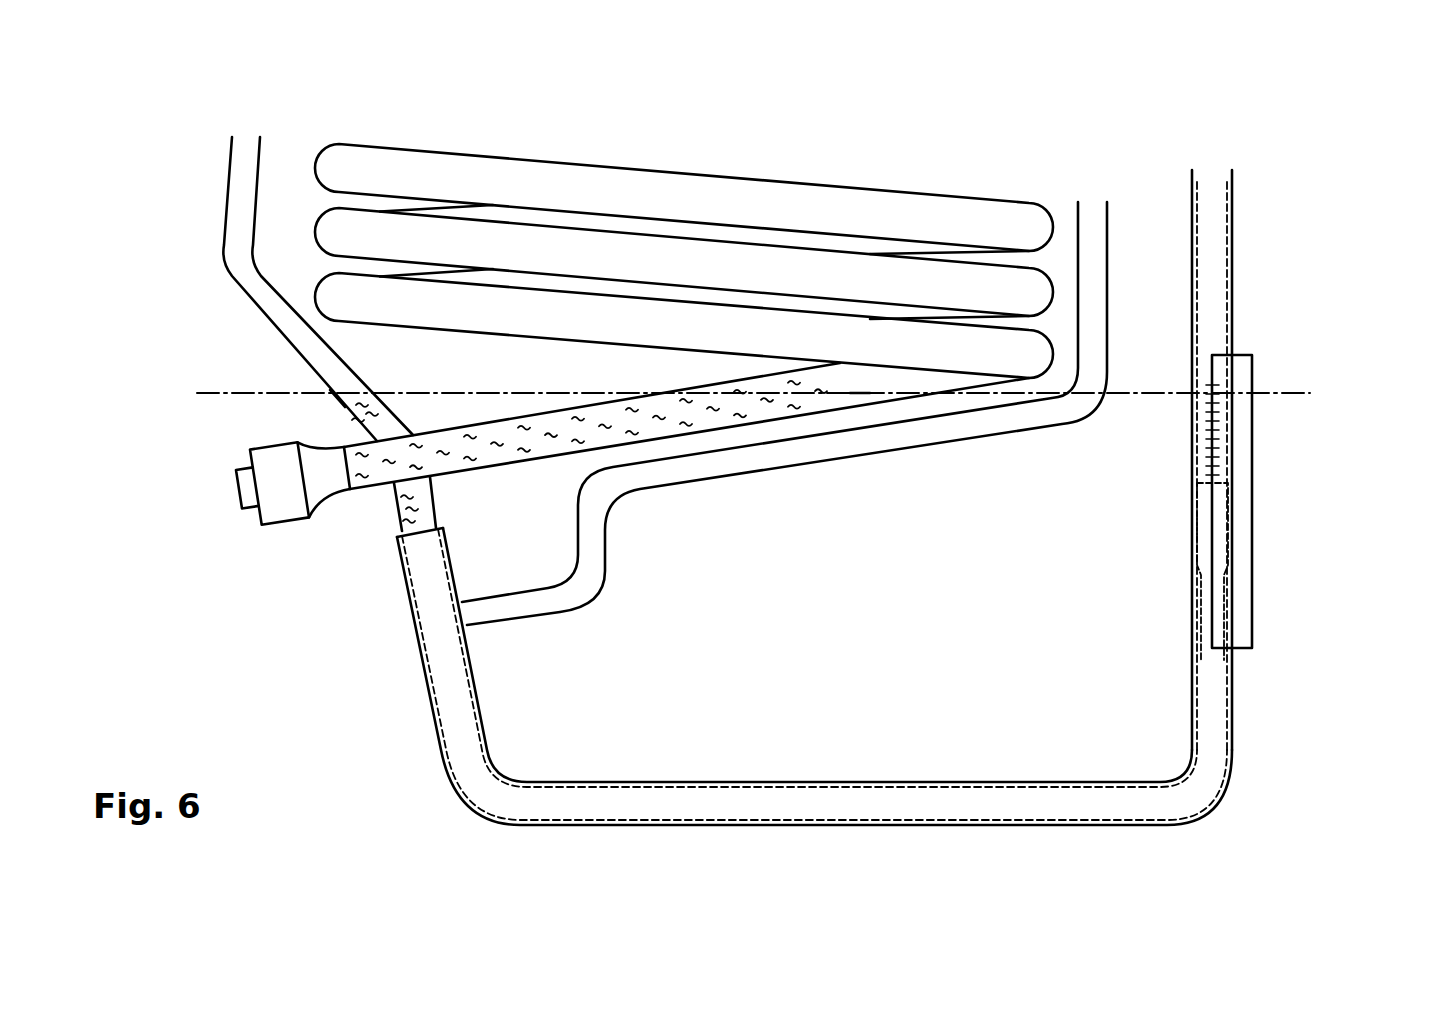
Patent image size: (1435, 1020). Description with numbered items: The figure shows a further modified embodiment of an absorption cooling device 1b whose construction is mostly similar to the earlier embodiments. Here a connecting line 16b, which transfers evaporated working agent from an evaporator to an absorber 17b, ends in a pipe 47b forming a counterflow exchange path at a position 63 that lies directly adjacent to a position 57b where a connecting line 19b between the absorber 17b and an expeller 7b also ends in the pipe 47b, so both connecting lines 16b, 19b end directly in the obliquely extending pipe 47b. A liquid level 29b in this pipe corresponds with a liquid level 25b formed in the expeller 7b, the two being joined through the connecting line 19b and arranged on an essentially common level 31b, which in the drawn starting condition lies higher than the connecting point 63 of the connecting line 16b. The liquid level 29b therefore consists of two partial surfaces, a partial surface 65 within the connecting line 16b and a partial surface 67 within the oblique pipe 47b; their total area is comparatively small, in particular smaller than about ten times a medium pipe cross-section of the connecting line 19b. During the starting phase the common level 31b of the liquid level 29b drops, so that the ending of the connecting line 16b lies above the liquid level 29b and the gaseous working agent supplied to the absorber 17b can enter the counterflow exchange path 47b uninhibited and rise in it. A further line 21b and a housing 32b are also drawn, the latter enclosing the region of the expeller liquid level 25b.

The absorption cooling device 1b is at (752, 128).
The absorber 17b is at (945, 178).
The pipe forming counterflow exchange path 47b is at (352, 146).
The connecting line 16b is at (228, 200).
The partial surface 65 is at (336, 394).
The liquid level 29b is at (367, 398).
The position 63 is at (372, 440).
The position 57b is at (440, 497).
The connecting line 19b is at (398, 512).
The partial surface 67 is at (860, 393).
The steam line 21b is at (980, 437).
The common level 31b is at (1127, 390).
The liquid level 25b is at (1218, 390).
The expeller 7b is at (1335, 357).
The sensor housing 32b is at (1253, 594).